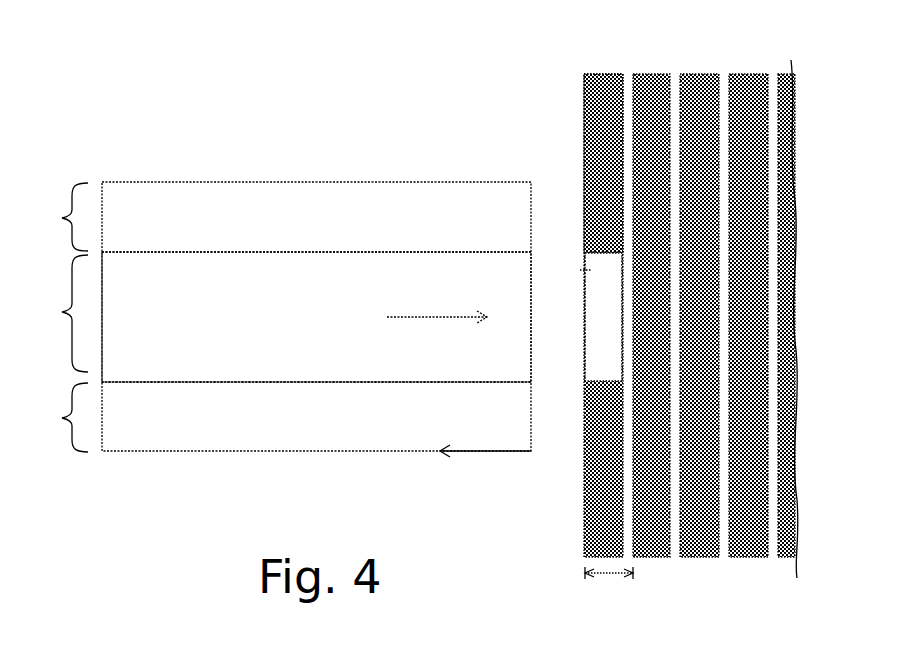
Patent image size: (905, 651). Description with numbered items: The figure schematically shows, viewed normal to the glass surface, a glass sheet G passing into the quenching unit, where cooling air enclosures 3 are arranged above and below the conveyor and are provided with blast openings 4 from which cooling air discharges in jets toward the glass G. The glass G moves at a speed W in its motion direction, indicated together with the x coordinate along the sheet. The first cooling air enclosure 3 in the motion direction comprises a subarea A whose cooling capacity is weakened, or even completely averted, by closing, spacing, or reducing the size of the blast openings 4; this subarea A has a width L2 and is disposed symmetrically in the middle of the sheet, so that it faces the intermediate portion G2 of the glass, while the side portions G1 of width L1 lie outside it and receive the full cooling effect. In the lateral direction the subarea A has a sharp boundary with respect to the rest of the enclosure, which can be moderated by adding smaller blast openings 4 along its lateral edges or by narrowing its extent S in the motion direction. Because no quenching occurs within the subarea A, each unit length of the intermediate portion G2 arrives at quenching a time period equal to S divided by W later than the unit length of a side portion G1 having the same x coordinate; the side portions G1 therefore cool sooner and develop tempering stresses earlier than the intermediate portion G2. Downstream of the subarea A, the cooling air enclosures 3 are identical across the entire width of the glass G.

The cooling air enclosure 3 is at (637, 74).
The blast opening 4 is at (590, 100).
The glass G is at (350, 182).
The side portion of the glass G1 is at (183, 207).
The intermediate portion of the glass G2 is at (274, 284).
The subarea weakened in cooling capacity A is at (590, 270).
The width of side portion L1 is at (53, 317).
The width of subarea L2 is at (51, 313).
The speed of the glass W is at (437, 302).
The length of subarea in motion direction S is at (609, 589).
The x coordinate x is at (485, 439).